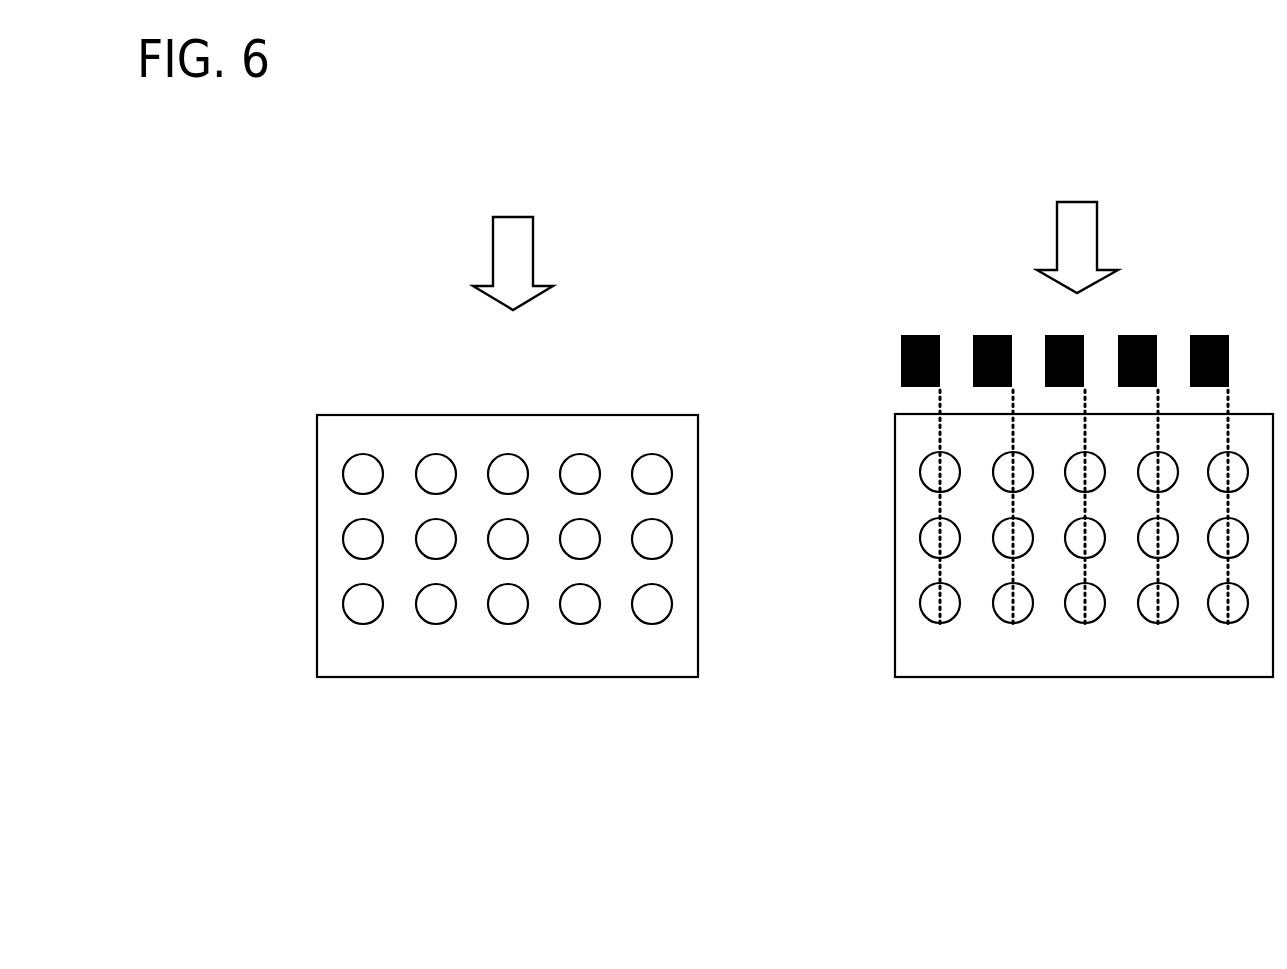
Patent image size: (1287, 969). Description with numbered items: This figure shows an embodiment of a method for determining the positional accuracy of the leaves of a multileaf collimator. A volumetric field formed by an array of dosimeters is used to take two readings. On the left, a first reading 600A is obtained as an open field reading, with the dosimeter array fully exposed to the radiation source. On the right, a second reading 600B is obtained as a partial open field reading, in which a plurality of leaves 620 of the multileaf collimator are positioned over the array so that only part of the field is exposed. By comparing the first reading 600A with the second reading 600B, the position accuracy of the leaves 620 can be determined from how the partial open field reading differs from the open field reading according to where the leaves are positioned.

The first reading 600A is at (464, 528).
The second reading 600B is at (1040, 520).
The leaves 620 is at (901, 345).